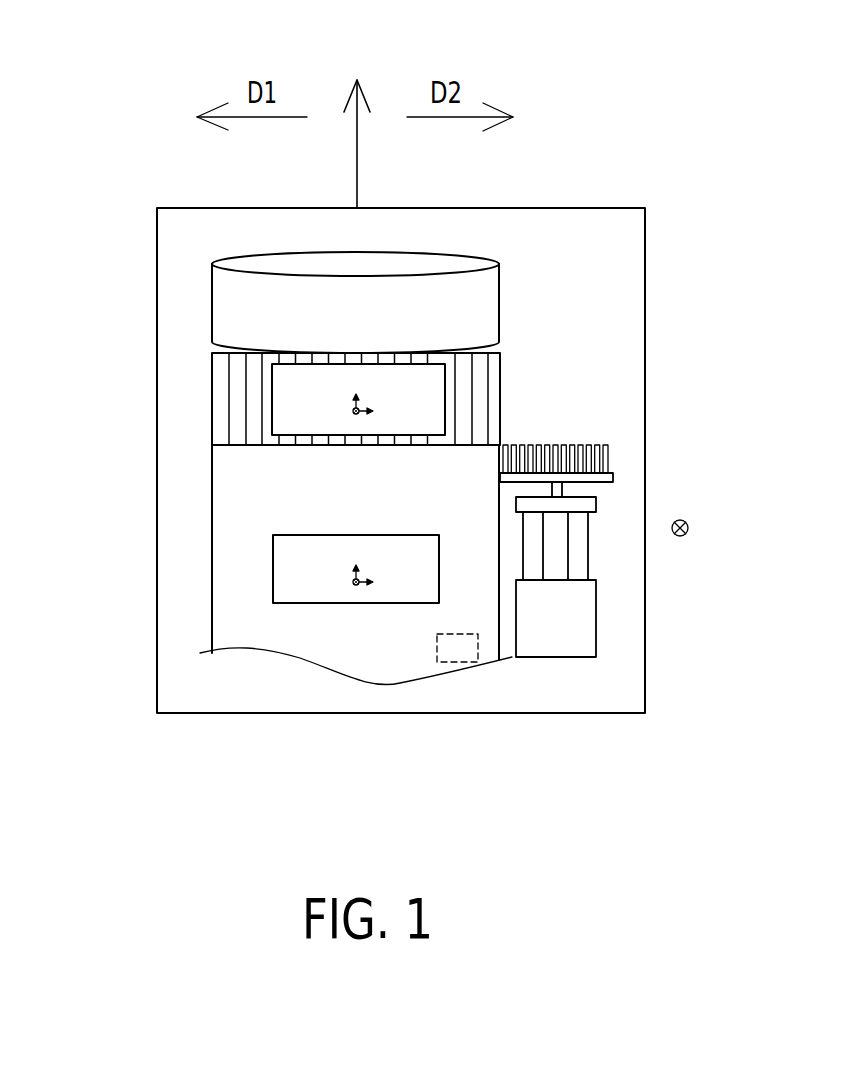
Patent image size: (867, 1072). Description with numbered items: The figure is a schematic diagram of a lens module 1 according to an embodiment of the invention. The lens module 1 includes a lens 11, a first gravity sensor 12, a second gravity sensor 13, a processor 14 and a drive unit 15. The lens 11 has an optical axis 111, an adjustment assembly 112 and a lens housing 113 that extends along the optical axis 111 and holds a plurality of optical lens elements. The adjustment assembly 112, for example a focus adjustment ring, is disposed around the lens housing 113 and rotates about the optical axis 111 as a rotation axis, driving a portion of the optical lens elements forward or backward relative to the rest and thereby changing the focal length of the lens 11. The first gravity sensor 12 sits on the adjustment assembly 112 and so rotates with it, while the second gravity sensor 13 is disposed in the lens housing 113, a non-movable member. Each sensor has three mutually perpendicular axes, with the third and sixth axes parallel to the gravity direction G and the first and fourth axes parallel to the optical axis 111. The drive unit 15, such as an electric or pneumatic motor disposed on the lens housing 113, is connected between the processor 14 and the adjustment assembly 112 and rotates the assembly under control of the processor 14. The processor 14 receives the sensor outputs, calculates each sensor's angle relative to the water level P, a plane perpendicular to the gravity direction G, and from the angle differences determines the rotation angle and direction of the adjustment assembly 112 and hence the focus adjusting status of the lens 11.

The lens module 1 is at (120, 42).
The lens 11 is at (92, 154).
The optical axis 111 is at (355, 184).
The adjustment assembly 112 is at (220, 398).
The lens housing 113 is at (220, 525).
The first gravity sensor 12 is at (445, 398).
The second gravity sensor 13 is at (272, 568).
The processor 14 is at (462, 663).
The drive unit 15 is at (578, 607).
The water level P is at (610, 300).
The gravity direction G is at (688, 529).